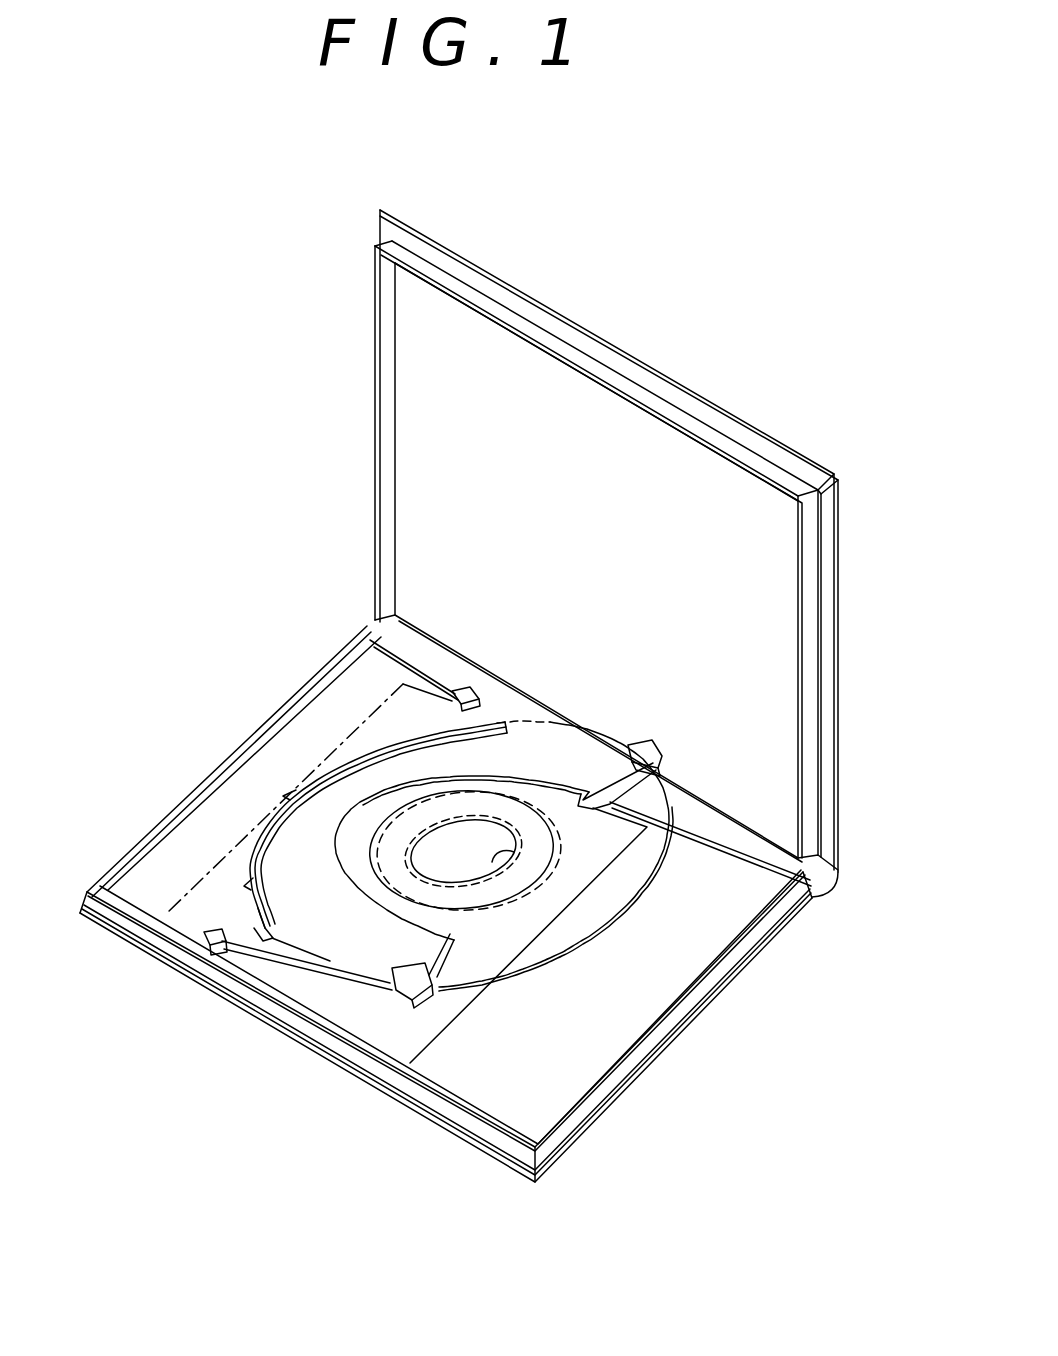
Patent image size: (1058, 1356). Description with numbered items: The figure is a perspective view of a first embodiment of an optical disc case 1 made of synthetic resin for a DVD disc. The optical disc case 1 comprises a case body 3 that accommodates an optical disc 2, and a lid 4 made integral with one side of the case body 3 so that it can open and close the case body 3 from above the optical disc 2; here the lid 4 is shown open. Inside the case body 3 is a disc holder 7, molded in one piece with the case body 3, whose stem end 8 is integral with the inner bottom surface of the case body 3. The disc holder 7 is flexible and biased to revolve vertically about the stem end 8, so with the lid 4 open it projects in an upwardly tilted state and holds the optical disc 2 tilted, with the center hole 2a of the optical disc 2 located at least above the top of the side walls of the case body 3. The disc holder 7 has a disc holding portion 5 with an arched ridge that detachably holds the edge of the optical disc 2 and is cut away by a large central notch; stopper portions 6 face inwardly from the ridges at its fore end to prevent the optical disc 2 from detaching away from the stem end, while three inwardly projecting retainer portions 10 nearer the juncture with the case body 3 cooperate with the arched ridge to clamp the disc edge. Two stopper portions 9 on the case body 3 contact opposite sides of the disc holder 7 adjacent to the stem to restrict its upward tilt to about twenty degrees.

The optical disc case 1 is at (248, 430).
The optical disc 2 is at (540, 960).
The center hole 2a is at (512, 857).
The case body 3 is at (483, 1092).
The lid 4 is at (602, 404).
The disc holding portion 5 is at (354, 777).
The stopper portions 6 is at (650, 745).
The disc holder 7 is at (257, 937).
The stem end 8 is at (308, 770).
The stopper portions 9 is at (460, 688).
The retainer portions 10 is at (293, 800).